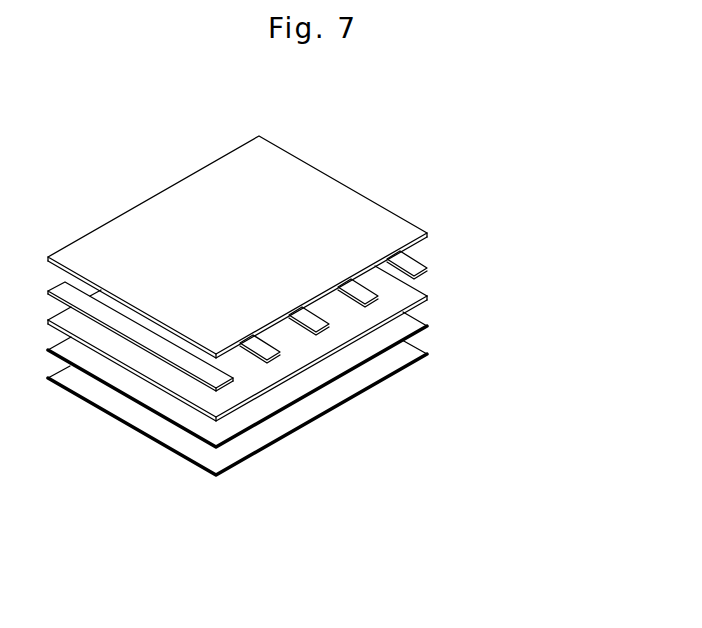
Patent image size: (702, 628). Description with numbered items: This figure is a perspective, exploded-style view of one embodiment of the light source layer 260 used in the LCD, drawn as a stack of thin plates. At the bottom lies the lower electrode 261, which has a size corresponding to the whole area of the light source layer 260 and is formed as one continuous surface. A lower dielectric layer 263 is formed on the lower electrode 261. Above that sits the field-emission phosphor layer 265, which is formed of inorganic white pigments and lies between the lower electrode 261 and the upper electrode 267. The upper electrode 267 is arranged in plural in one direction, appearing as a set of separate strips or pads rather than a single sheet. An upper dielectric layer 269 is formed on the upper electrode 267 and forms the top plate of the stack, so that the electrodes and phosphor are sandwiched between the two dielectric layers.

The light source layer 260 is at (117, 166).
The lower electrode 261 is at (428, 357).
The lower dielectric layer 263 is at (428, 327).
The field-emission phosphor layer 265 is at (428, 297).
The upper electrode 267 is at (428, 268).
The upper dielectric layer 269 is at (428, 237).